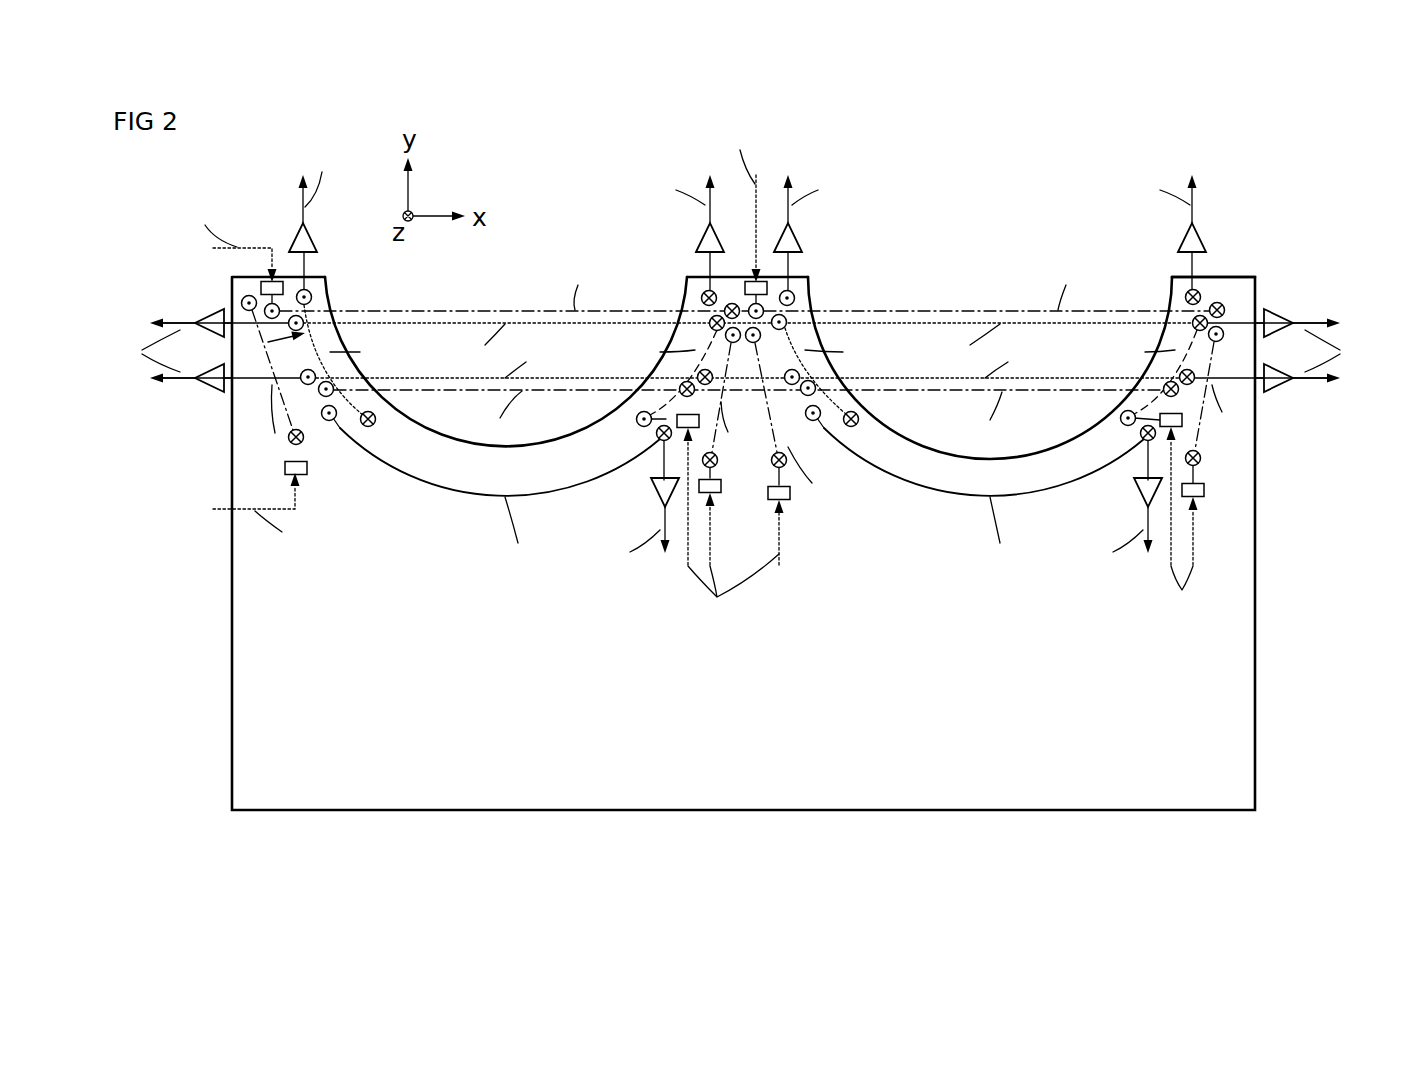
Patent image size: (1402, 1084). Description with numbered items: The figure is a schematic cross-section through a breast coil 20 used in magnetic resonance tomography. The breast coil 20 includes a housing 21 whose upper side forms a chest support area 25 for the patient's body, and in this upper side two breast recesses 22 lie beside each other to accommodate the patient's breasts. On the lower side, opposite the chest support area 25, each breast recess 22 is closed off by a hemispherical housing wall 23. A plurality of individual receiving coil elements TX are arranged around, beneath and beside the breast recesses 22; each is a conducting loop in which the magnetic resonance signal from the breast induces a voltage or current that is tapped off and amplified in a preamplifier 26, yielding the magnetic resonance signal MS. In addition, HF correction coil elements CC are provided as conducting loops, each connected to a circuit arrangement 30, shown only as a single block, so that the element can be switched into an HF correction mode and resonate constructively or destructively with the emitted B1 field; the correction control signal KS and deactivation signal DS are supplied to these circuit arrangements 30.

The breast coil 20 is at (1138, 155).
The housing 21 is at (232, 584).
The breast recess 22 is at (511, 283).
The hemispherical housing wall 23 is at (470, 449).
The chest support area 25 is at (1232, 276).
The preamplifier 26 is at (297, 235).
The circuit arrangement 30 is at (261, 288).